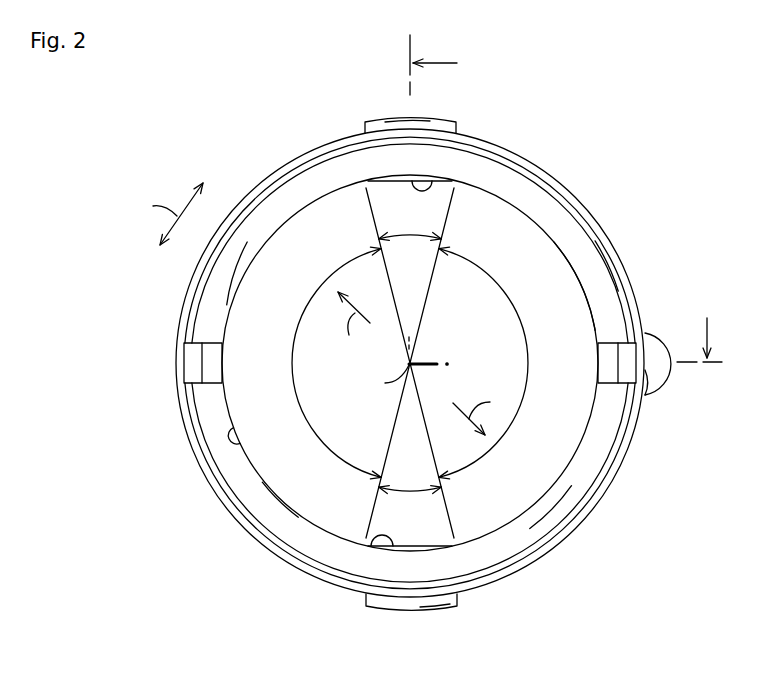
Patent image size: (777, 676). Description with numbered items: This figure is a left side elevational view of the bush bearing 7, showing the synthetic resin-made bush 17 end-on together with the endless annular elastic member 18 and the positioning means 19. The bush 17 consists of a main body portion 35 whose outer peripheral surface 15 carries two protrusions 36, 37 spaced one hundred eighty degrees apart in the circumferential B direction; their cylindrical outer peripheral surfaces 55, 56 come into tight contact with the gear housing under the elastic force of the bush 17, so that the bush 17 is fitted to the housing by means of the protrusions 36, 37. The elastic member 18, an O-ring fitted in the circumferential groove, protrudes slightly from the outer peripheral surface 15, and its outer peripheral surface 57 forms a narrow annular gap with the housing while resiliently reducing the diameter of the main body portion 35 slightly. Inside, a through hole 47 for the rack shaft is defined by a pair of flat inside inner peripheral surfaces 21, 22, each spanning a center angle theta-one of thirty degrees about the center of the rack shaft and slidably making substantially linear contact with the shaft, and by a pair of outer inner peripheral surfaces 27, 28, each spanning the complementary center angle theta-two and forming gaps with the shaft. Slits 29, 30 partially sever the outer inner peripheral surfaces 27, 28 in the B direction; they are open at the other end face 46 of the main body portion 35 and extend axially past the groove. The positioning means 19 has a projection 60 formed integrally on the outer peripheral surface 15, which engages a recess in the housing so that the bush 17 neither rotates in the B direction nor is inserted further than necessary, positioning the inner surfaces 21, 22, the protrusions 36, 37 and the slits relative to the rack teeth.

The bush bearing 7 is at (600, 188).
The outer peripheral surface 15 is at (248, 527).
The bush 17 is at (288, 172).
The endless annular elastic member 18 is at (600, 505).
The positioning means 19 is at (660, 395).
The inside inner peripheral surface 21 is at (422, 188).
The inside inner peripheral surface 22 is at (385, 542).
The outer inner peripheral surface 27 is at (576, 268).
The outer inner peripheral surface 28 is at (235, 443).
The slit 29 is at (627, 368).
The slit 30 is at (194, 363).
The main body portion 35 is at (522, 190).
The protrusion 36 is at (375, 126).
The protrusion 37 is at (413, 606).
The other end face 46 is at (205, 318).
The through hole 47 is at (265, 468).
The cylindrical outer peripheral surface 55 is at (404, 122).
The cylindrical outer peripheral surface 56 is at (445, 606).
The outer peripheral surface 57 is at (605, 244).
The projection 60 is at (651, 345).